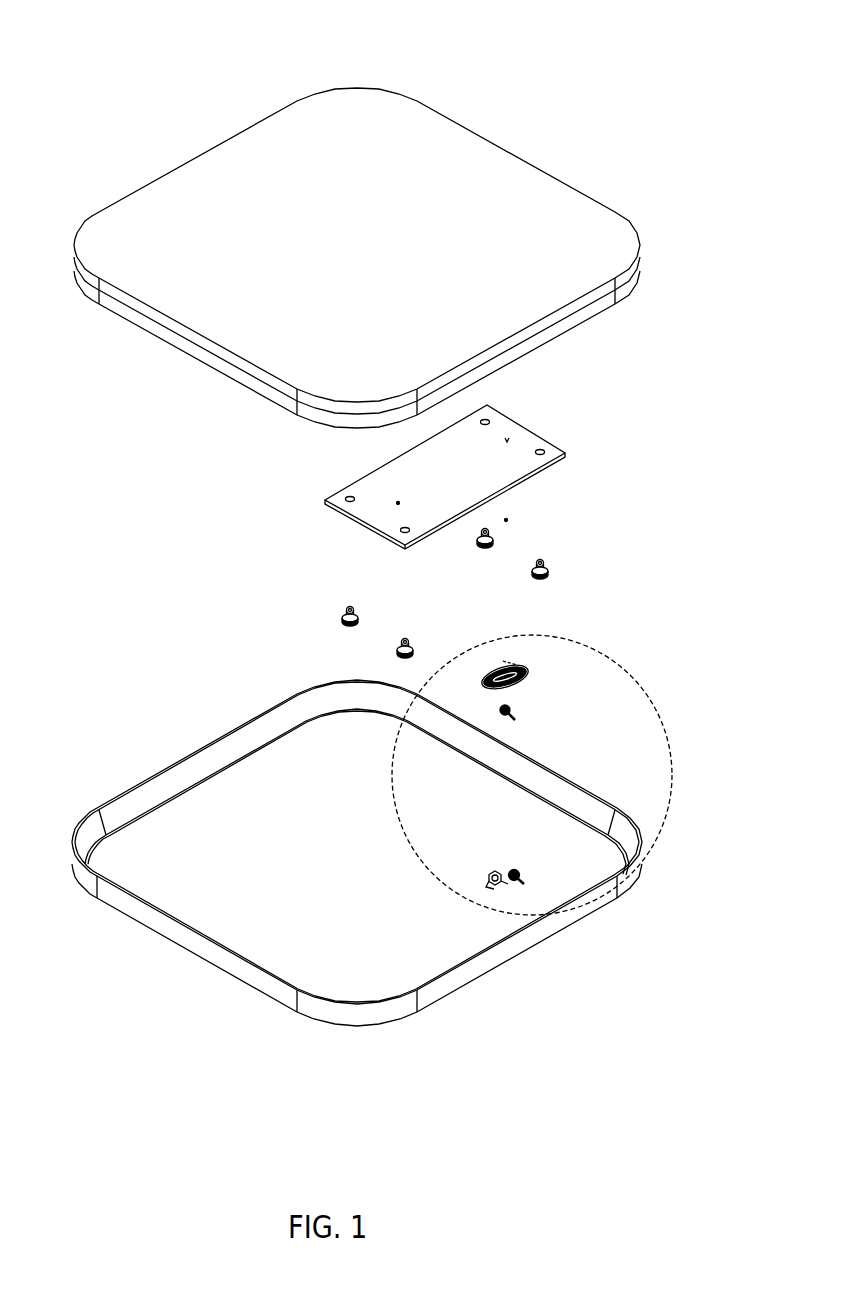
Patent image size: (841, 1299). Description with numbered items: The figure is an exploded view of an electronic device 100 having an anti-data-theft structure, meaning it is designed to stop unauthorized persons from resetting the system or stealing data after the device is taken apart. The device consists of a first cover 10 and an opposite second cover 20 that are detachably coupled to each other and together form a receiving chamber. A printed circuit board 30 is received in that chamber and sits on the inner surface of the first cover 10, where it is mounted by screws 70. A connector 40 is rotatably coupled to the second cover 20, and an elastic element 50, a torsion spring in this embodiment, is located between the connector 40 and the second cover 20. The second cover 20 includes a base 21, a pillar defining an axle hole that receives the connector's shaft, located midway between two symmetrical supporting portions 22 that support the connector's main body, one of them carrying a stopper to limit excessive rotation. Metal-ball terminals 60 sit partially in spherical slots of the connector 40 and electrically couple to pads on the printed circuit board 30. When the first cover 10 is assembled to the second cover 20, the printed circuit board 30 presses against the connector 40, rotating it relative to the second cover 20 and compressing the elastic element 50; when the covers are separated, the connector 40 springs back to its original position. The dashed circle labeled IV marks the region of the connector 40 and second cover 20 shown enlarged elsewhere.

The electronic device 100 is at (373, 29).
The first cover 10 is at (208, 180).
The second cover 20 is at (383, 983).
The base 21 is at (499, 887).
The supporting portions 22 is at (521, 879).
The printed circuit board 30 is at (530, 463).
The connector 40 is at (527, 657).
The elastic element 50 is at (513, 711).
The terminals 60 is at (486, 665).
The screws 70 is at (343, 609).
The detail view indicator IV is at (632, 679).